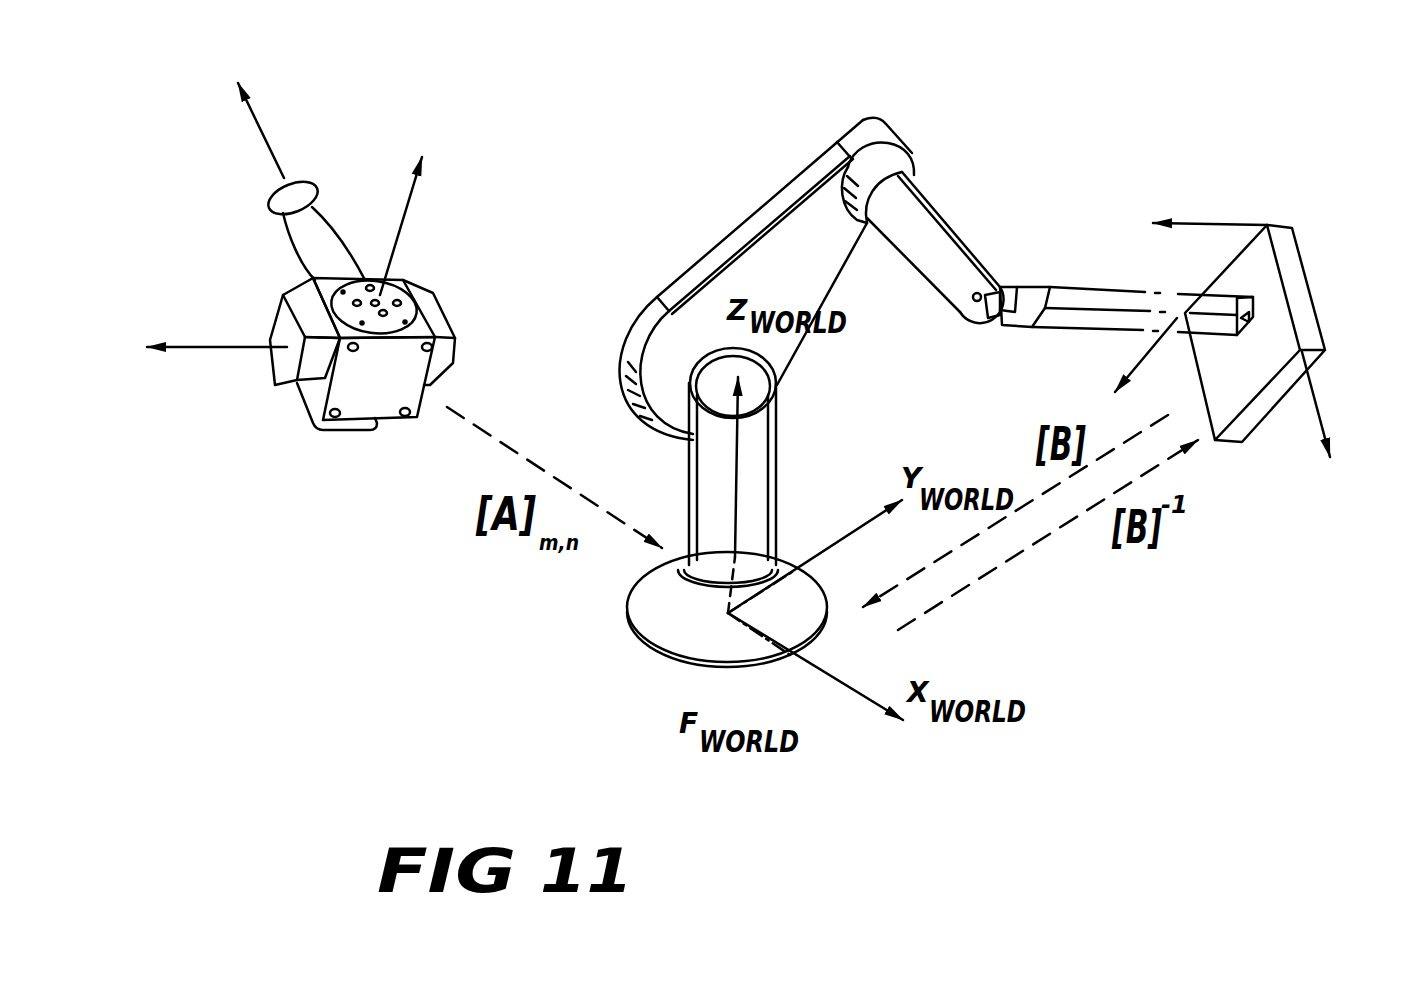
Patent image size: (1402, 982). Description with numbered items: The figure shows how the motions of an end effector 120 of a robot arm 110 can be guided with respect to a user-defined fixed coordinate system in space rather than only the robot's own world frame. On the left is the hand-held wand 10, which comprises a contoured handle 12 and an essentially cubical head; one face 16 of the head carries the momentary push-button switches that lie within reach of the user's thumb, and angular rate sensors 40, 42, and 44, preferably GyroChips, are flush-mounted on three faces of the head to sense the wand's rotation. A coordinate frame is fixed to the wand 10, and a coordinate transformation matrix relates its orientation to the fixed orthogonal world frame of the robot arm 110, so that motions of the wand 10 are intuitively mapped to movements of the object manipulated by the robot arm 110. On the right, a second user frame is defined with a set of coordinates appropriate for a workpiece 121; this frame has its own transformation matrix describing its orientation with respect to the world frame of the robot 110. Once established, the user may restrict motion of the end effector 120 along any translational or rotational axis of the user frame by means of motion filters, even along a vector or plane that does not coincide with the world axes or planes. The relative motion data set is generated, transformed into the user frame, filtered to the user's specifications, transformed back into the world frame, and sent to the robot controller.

The wand 10 is at (333, 268).
The handle 12 is at (302, 257).
The face 16 is at (403, 280).
The angular rate sensor 40 is at (277, 370).
The angular rate sensor 42 is at (302, 420).
The angular rate sensor 44 is at (457, 343).
The robot arm 110 is at (772, 188).
The end effector 120 is at (1040, 288).
The workpiece 121 is at (1297, 287).